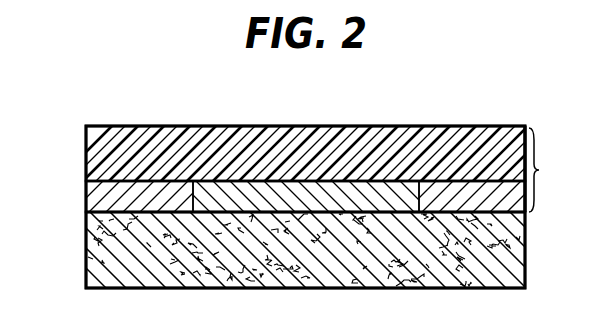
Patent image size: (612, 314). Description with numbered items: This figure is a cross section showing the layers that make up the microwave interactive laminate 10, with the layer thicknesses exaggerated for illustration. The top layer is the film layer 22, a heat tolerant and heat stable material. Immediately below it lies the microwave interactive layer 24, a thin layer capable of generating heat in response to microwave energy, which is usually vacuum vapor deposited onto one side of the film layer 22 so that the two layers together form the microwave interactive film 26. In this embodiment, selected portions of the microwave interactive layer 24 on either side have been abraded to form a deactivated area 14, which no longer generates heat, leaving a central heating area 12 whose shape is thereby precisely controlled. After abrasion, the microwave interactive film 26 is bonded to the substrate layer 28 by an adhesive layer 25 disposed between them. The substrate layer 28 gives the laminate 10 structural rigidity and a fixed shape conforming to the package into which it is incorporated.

The microwave interactive laminate 10 is at (523, 106).
The heating area 12 is at (313, 185).
The deactivated area 14 is at (157, 183).
The film layer 22 is at (86, 152).
The microwave interactive layer 24 is at (285, 154).
The adhesive layer 25 is at (86, 214).
The microwave interactive film 26 is at (539, 170).
The substrate layer 28 is at (86, 262).